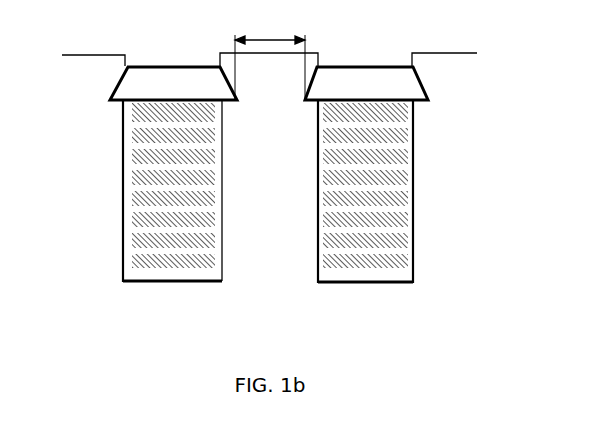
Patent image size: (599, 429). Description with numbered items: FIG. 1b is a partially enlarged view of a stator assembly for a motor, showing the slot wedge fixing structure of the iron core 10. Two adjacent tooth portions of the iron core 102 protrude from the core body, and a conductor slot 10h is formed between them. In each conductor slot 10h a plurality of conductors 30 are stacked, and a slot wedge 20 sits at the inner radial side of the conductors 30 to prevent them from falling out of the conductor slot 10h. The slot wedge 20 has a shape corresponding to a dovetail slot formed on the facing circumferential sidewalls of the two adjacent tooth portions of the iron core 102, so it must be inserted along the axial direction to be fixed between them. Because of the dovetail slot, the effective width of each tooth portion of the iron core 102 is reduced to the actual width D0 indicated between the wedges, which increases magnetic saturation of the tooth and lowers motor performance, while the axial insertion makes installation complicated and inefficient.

The iron core 10 is at (458, 88).
The tooth portion of the iron core 102 is at (262, 240).
The conductor slot 10h is at (175, 270).
The conductors 30 is at (122, 270).
The slot wedge 20 is at (158, 84).
The actual width of the tooth portion of the iron core D0 is at (270, 51).